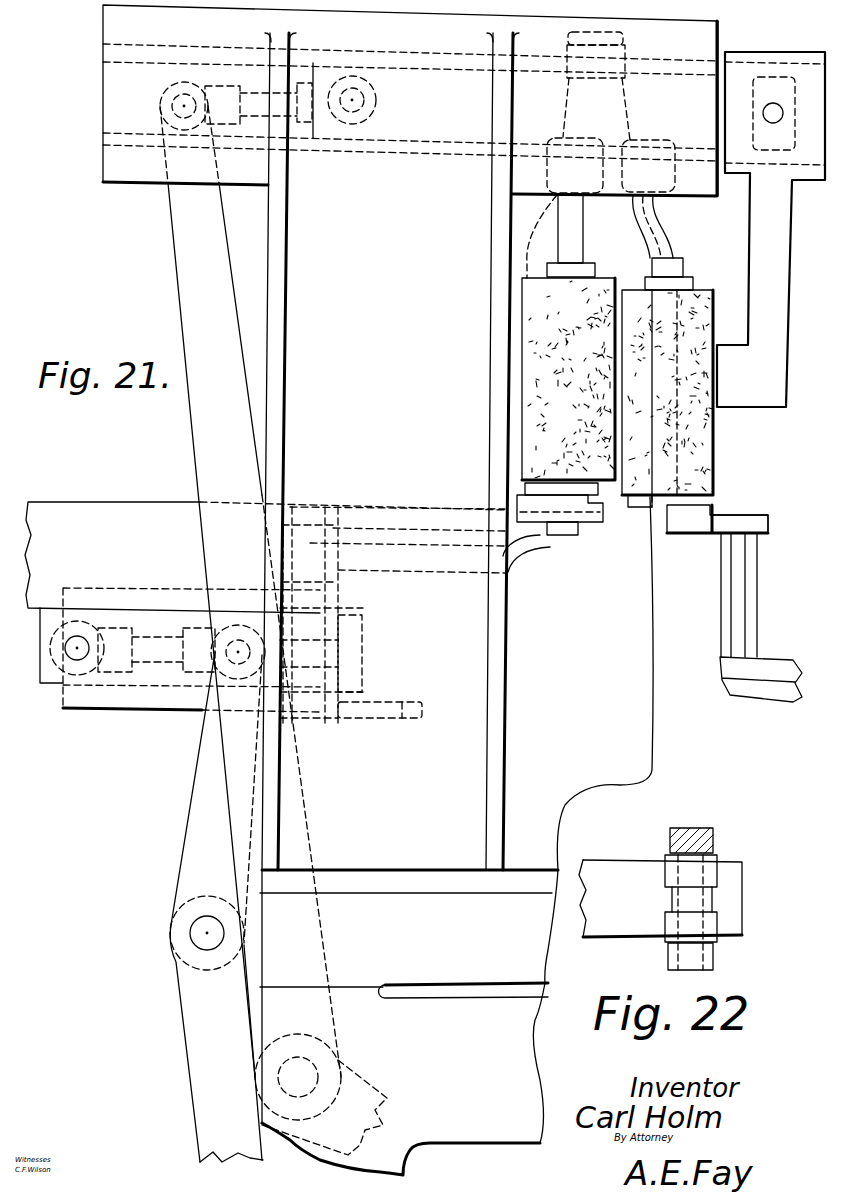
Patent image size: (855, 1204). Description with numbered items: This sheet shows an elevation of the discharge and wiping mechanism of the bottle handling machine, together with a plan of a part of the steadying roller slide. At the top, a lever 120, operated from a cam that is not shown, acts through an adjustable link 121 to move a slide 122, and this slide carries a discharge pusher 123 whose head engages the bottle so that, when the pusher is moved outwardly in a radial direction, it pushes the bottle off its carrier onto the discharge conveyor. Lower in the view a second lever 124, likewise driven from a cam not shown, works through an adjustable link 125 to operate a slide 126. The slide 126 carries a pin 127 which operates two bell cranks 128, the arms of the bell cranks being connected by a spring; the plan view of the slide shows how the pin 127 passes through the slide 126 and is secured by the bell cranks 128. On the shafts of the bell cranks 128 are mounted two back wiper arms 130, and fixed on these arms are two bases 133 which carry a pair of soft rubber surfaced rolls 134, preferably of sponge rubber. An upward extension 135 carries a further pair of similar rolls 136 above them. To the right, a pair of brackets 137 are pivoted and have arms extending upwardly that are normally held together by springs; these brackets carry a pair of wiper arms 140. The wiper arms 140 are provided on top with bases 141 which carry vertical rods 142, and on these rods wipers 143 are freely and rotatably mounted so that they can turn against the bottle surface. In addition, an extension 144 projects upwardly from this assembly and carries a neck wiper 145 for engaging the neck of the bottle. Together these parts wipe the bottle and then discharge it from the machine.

In FIG. 21, the lever 120 is at (167, 224).
In FIG. 21, the adjustable link 121 is at (260, 97).
In FIG. 21, the slide 122 is at (336, 135).
In FIG. 21, the discharge pusher 123 is at (760, 274).
In FIG. 21, the lever 124 is at (170, 1052).
In FIG. 21, the adjustable link 125 is at (168, 653).
In FIG. 21, the slide 126 is at (357, 677).
In FIG. 22, the slide 126 is at (647, 853).
In FIG. 22, the pin 127 is at (705, 897).
In FIG. 22, the bell cranks 128 is at (713, 833).
In FIG. 21, the back wiper arms 130 is at (437, 597).
In FIG. 21, the bases 133 is at (567, 513).
In FIG. 21, the soft rubber surfaced rolls 134 is at (485, 470).
In FIG. 21, the upward extension 135 is at (576, 239).
In FIG. 21, the rolls 136 is at (553, 170).
In FIG. 21, the brackets 137 is at (768, 523).
In FIG. 21, the wiper arms 140 is at (798, 655).
In FIG. 21, the bases 141 is at (800, 491).
In FIG. 21, the vertical rods 142 is at (682, 263).
In FIG. 21, the wipers 143 is at (706, 441).
In FIG. 21, the extension 144 is at (661, 237).
In FIG. 21, the neck wiper 145 is at (671, 147).